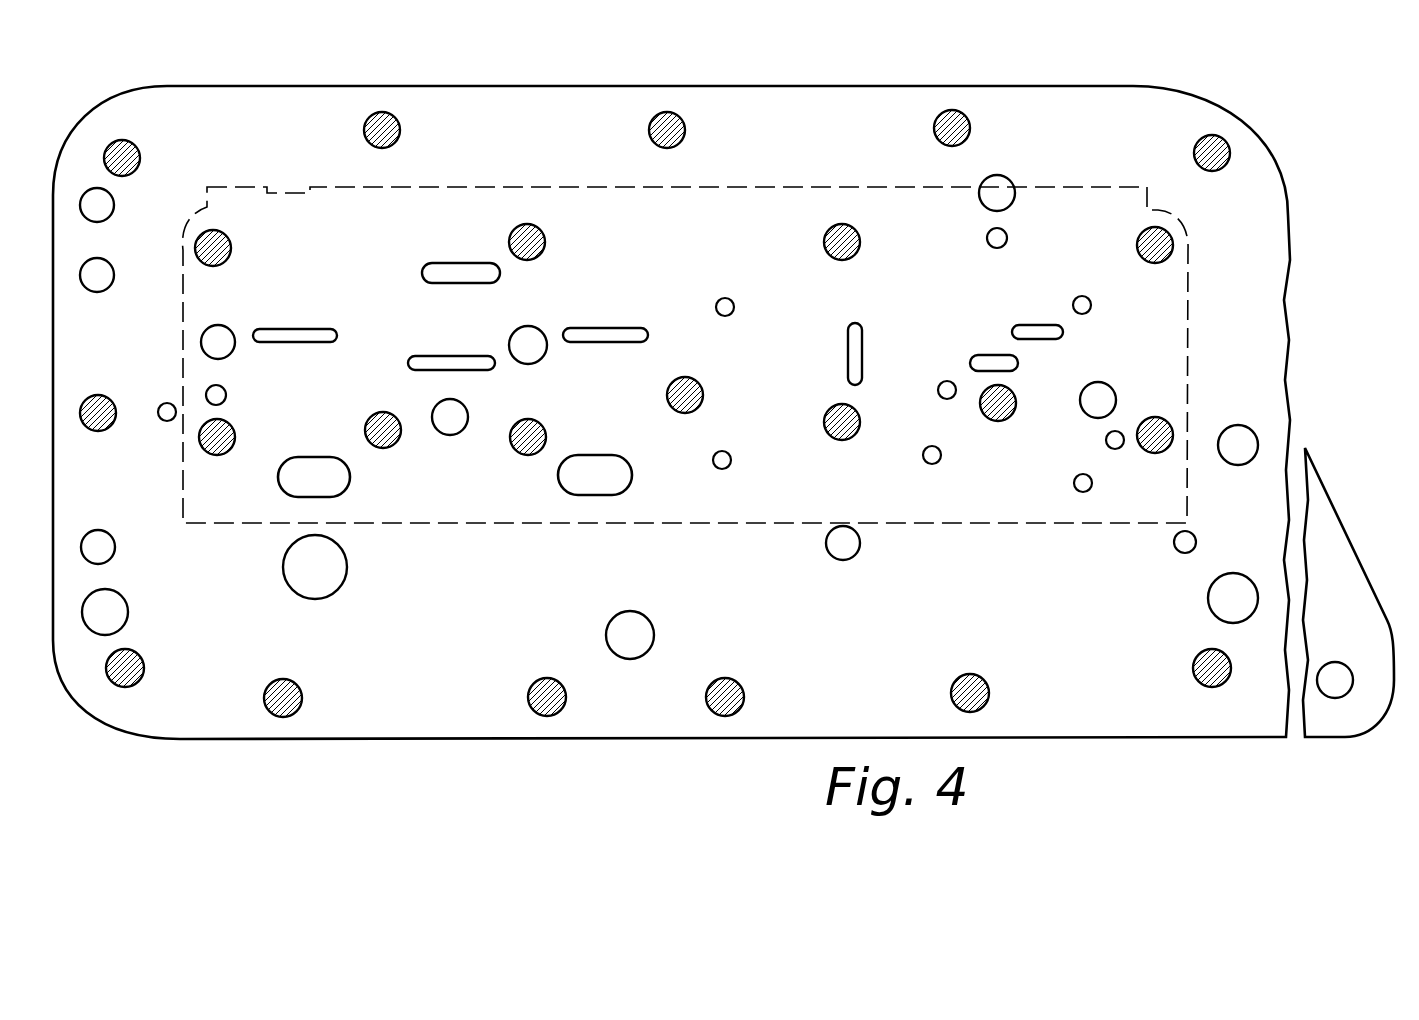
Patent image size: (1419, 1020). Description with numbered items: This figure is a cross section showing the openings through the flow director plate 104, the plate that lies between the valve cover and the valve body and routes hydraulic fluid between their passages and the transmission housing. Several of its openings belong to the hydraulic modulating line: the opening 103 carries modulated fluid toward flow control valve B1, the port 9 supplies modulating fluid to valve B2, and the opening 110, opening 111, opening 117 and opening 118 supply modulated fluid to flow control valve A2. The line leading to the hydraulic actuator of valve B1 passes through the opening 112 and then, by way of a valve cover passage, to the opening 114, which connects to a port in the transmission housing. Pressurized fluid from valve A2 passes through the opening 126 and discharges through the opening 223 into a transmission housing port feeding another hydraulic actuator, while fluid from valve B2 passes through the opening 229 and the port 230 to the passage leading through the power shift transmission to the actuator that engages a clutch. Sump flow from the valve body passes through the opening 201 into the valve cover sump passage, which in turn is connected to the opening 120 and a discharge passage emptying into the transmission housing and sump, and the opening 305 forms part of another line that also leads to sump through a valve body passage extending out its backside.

The flow director plate 104 is at (1065, 84).
The opening 114 is at (114, 206).
The opening 223 is at (105, 289).
The port 230 is at (110, 550).
The opening 111 is at (216, 332).
The opening 110 is at (307, 335).
The opening 117 is at (448, 272).
The opening 229 is at (435, 362).
The opening 126 is at (528, 338).
The opening 118 is at (615, 335).
The port 9 is at (466, 410).
The opening 305 is at (862, 348).
The opening 120 is at (1003, 204).
The opening 103 is at (1056, 339).
The opening 112 is at (1012, 371).
The opening 201 is at (1090, 406).